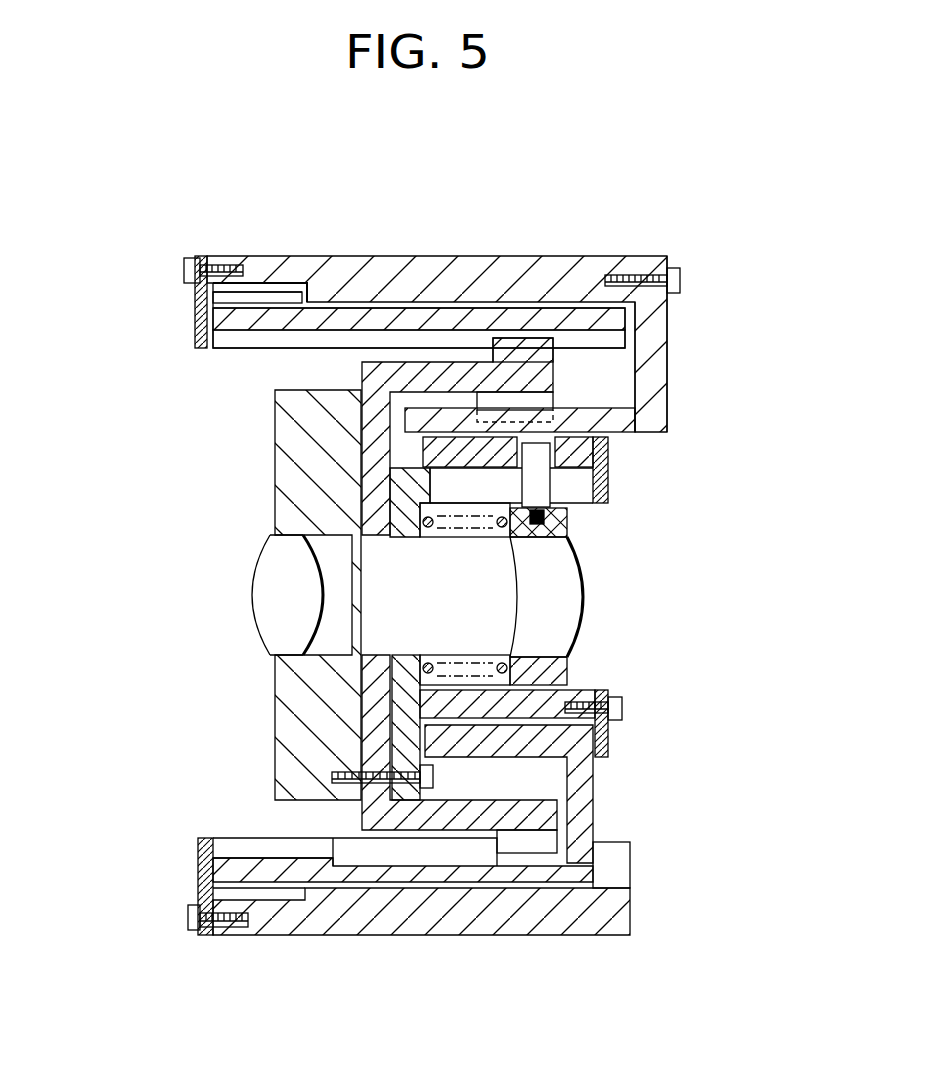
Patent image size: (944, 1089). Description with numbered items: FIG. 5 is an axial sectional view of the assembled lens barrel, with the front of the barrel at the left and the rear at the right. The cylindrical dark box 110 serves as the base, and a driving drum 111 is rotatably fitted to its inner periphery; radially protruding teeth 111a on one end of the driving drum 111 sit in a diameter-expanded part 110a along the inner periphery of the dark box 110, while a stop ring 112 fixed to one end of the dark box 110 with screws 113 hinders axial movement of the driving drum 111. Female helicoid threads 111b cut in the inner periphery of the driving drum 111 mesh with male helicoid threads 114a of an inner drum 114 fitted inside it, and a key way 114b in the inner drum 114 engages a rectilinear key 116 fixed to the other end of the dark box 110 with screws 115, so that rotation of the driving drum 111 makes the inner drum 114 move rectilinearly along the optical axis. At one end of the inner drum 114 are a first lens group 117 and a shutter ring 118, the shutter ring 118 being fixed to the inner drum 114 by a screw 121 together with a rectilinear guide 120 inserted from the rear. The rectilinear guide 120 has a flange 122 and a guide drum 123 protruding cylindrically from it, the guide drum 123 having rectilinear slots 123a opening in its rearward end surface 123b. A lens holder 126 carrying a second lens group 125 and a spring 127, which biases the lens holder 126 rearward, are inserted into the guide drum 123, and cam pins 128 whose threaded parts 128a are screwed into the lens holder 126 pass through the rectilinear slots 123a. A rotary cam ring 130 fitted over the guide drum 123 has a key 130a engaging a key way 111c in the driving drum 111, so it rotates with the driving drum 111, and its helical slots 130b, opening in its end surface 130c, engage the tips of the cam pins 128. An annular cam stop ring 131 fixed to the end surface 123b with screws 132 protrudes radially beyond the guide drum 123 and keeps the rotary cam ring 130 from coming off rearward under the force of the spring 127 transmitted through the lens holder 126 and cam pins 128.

The cylindrical dark box 110 is at (452, 272).
The diameter-expanded part 110a is at (250, 292).
The driving drum 111 is at (343, 316).
The teeth 111a is at (287, 293).
The female helicoid threads 111b is at (295, 348).
The key way 111c is at (612, 866).
The stop ring 112 is at (258, 300).
The screws 113 is at (185, 270).
The inner drum 114 is at (415, 370).
The male helicoid threads 114a is at (523, 347).
The key way 114b is at (548, 455).
The screws 115 is at (683, 272).
The rectilinear key 116 is at (650, 375).
The first lens group 117 is at (274, 568).
The shutter ring 118 is at (300, 484).
The rectilinear guide 120 is at (490, 844).
The screw 121 is at (434, 776).
The flange 122 is at (403, 792).
The guide drum 123 is at (533, 707).
The rectilinear slots 123a is at (452, 492).
The end surface 123b is at (609, 480).
The second lens group 125 is at (542, 619).
The lens holder 126 is at (565, 668).
The spring 127 is at (425, 660).
The cam pins 128 is at (540, 484).
The threaded parts 128a is at (560, 522).
The rotary cam ring 130 is at (478, 636).
The key 130a is at (582, 791).
The helical slots 130b is at (598, 440).
The end surface 130c is at (421, 451).
The cam stop ring 131 is at (608, 738).
The screws 132 is at (622, 704).